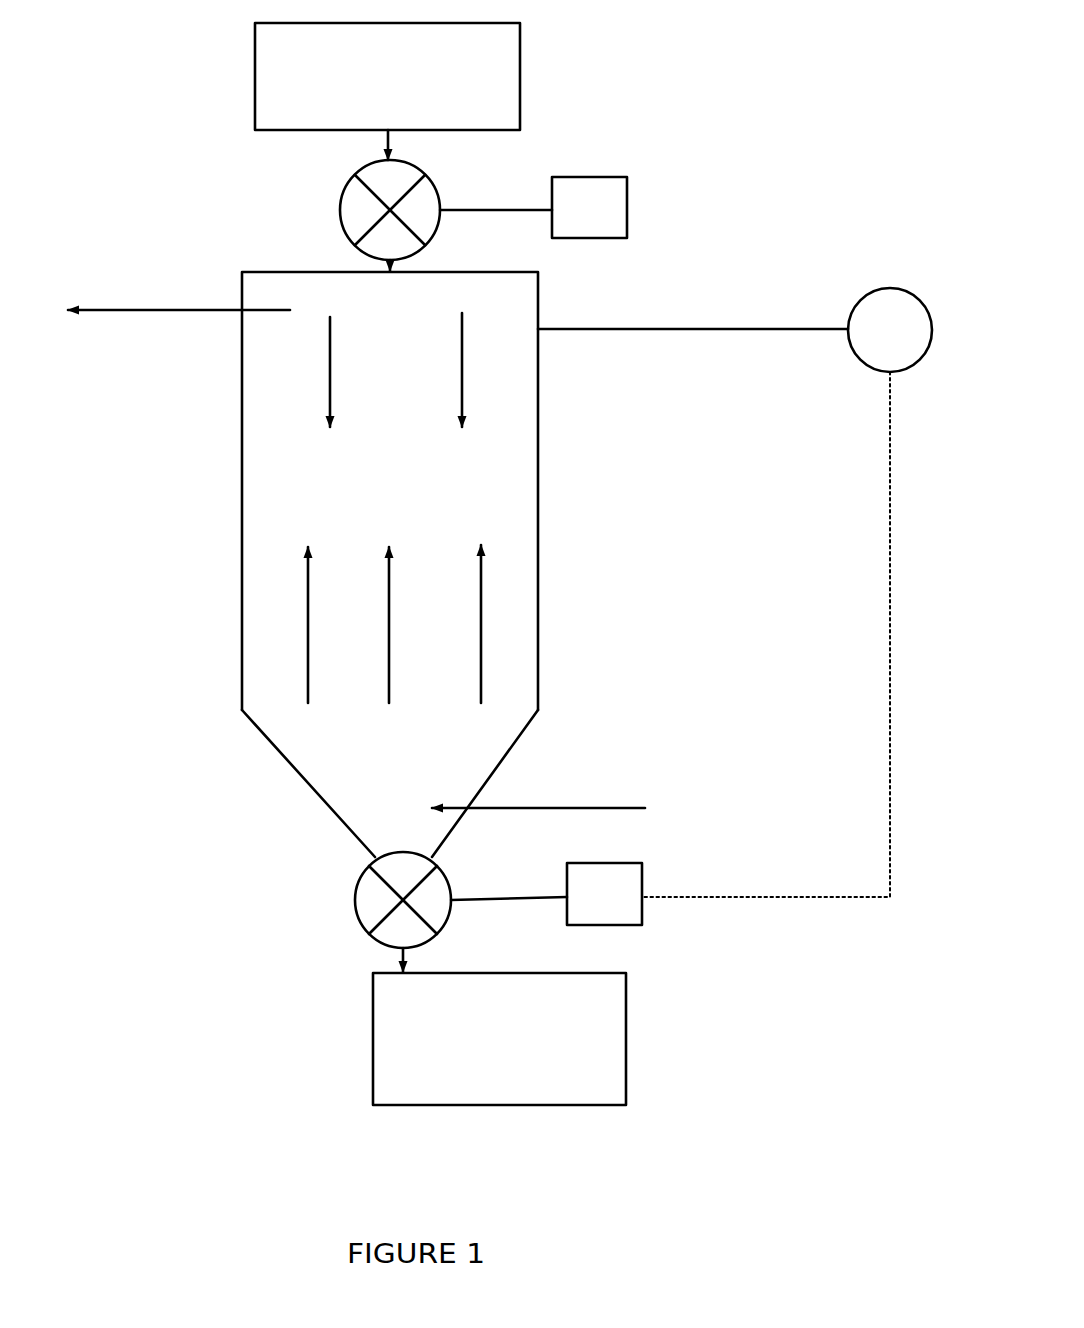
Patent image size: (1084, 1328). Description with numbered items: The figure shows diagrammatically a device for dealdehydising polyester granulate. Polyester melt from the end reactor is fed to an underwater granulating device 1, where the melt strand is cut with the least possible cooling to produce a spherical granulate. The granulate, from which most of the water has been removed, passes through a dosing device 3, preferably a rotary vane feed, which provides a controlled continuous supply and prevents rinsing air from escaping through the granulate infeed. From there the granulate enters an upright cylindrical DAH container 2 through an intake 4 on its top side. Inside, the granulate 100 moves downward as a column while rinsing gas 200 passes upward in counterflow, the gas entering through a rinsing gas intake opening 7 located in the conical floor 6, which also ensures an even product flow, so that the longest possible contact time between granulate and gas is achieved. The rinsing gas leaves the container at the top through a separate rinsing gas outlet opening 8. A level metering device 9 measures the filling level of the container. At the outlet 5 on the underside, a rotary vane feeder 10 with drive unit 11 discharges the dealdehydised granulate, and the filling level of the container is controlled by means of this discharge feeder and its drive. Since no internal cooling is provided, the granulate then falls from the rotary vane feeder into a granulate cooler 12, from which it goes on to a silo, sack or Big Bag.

The underwater granulating device 1 is at (255, 72).
The DAH container 2 is at (240, 475).
The dosing device 3 is at (342, 208).
The intake 4 is at (384, 269).
The outlet 5 is at (398, 961).
The conical floor 6 is at (335, 823).
The rinsing gas intake opening 7 is at (478, 803).
The rinsing gas outlet opening 8 is at (240, 314).
The level metering device 9 is at (884, 284).
The rotary vane feeder 10 is at (356, 905).
The drive unit 11 is at (645, 870).
The granulate cooler 12 is at (368, 1056).
The granulate 100 is at (396, 370).
The rinsing gas 200 is at (394, 624).